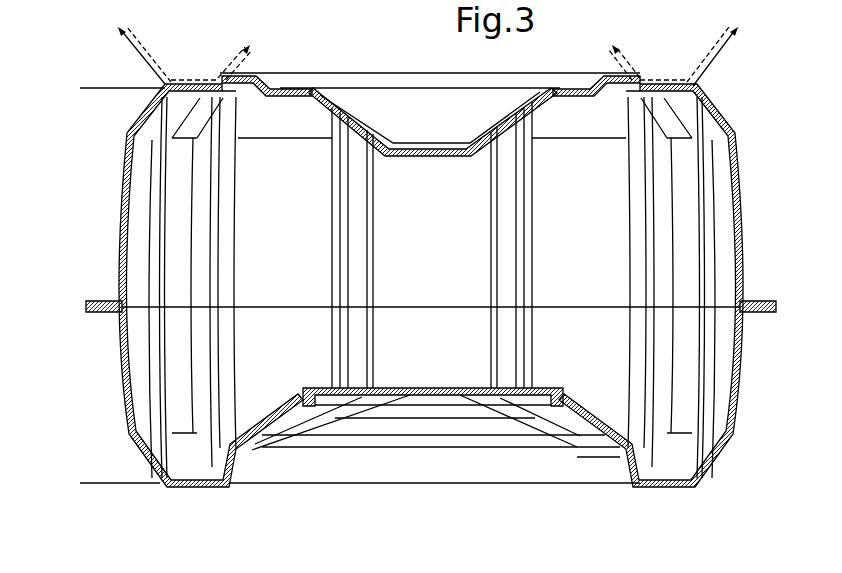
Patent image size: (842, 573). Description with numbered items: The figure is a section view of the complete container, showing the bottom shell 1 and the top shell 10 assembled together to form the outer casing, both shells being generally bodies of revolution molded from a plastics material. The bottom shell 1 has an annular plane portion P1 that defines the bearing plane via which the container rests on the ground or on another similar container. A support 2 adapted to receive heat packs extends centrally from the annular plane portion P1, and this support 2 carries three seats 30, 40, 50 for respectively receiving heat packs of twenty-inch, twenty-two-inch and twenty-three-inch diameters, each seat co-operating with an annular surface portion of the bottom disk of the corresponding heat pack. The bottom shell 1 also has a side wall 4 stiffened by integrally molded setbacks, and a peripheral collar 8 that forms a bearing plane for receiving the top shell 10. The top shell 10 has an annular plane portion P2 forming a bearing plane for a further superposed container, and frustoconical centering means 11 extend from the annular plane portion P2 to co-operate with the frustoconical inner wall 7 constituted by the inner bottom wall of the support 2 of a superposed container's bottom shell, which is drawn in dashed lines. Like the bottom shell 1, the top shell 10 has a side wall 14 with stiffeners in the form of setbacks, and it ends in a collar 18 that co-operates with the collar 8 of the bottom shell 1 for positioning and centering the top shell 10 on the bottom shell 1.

The bottom shell 1 is at (387, 285).
The support 2 is at (240, 70).
The side wall 4 is at (128, 417).
The frustoconical inner wall 7 is at (252, 58).
The peripheral collar 8 is at (428, 334).
The top shell 10 is at (371, 287).
The frustoconical centering means 11 is at (232, 84).
The side wall 14 is at (126, 182).
The collar 18 is at (98, 300).
The seat 30 is at (308, 417).
The seat 40 is at (284, 431).
The seat 50 is at (268, 452).
The annular plane portion P1 is at (343, 486).
The annular plane portion P2 is at (106, 90).